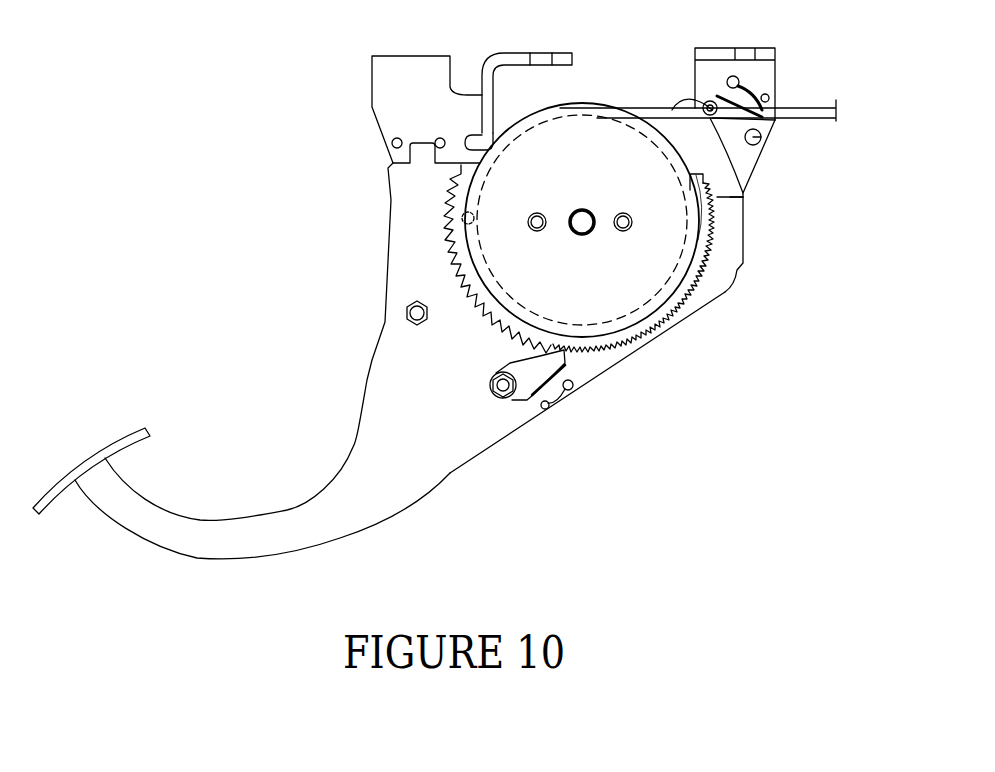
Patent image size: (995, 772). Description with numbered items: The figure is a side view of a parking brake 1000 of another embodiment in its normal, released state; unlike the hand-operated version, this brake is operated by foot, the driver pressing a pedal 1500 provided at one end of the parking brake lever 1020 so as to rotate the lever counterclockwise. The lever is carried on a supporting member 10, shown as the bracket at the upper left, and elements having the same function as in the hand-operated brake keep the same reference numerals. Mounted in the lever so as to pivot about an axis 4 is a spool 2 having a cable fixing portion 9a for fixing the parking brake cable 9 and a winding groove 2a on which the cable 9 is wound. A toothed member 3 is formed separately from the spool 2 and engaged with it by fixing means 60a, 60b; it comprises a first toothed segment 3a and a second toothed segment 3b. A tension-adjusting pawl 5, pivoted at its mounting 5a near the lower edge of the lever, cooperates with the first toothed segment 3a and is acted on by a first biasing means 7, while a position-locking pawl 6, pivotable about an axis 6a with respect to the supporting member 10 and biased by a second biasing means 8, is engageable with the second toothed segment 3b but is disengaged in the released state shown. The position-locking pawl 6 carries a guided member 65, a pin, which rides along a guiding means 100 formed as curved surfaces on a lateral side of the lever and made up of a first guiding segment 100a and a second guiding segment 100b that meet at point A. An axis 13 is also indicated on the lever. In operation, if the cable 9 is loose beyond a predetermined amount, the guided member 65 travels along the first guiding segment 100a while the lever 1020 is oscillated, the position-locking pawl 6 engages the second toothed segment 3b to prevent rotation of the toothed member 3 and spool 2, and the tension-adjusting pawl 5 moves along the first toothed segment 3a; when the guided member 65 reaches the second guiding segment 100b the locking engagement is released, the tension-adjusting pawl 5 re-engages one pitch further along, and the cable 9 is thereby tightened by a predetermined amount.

The parking brake 1000 is at (250, 290).
The supporting member 10 is at (372, 82).
The parking brake cable 9 is at (823, 104).
The cable fixing portion 9a is at (463, 220).
The second biasing means 8 is at (740, 80).
The guided member 65 is at (704, 103).
The position-locking pawl 6 is at (775, 128).
The axis 6a is at (762, 138).
The guiding means 100 is at (748, 210).
The first guiding segment 100a is at (746, 238).
The second guiding segment 100b is at (747, 168).
The spool 2 is at (648, 278).
The winding groove 2a is at (686, 265).
The axis 4 is at (583, 211).
The fixing means 60a is at (623, 213).
The fixing means 60b is at (537, 213).
The toothed member 3 is at (447, 273).
The first toothed segment 3a is at (443, 238).
The second toothed segment 3b is at (653, 337).
The axis 13 is at (407, 310).
The tension-adjusting pawl 5 is at (517, 403).
The pawl pivot nut 5a is at (505, 392).
The first biasing means 7 is at (565, 398).
The pedal 1500 is at (78, 458).
The parking brake lever 1020 is at (410, 503).